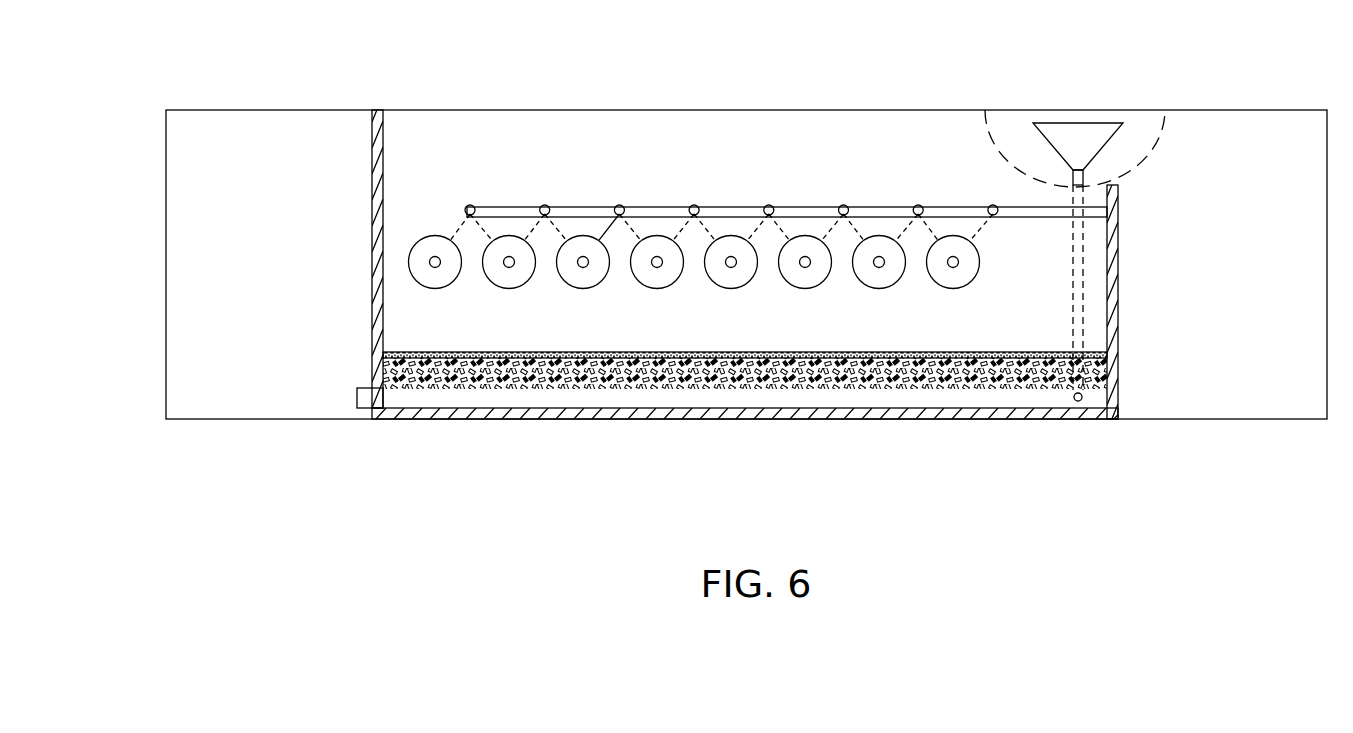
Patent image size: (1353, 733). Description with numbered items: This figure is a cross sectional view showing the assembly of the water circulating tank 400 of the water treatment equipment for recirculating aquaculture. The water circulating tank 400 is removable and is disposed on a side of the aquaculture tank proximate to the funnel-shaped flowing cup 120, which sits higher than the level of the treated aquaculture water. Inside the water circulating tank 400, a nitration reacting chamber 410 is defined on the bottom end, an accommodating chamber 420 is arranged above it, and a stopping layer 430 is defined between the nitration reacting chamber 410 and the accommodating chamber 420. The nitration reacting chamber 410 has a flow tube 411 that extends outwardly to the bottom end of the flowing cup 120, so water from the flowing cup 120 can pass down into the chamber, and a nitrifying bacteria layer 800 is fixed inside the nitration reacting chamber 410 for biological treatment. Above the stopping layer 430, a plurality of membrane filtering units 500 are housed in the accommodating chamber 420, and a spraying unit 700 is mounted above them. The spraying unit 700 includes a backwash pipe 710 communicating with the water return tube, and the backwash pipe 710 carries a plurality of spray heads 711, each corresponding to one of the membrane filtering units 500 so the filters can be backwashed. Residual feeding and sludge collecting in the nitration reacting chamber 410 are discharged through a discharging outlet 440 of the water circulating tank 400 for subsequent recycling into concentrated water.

The water circulating tank 400 is at (372, 170).
The nitration reacting chamber 410 is at (870, 400).
The flow tube 411 is at (1073, 319).
The accommodating chamber 420 is at (838, 163).
The stopping layer 430 is at (426, 352).
The discharging outlet 440 is at (357, 397).
The membrane filtering units 500 is at (427, 235).
The spraying unit 700 is at (724, 206).
The backwash pipe 710 is at (944, 204).
The spray heads 711 is at (620, 205).
The flowing cup 120 is at (1079, 140).
The nitrifying bacteria layer 800 is at (1027, 385).